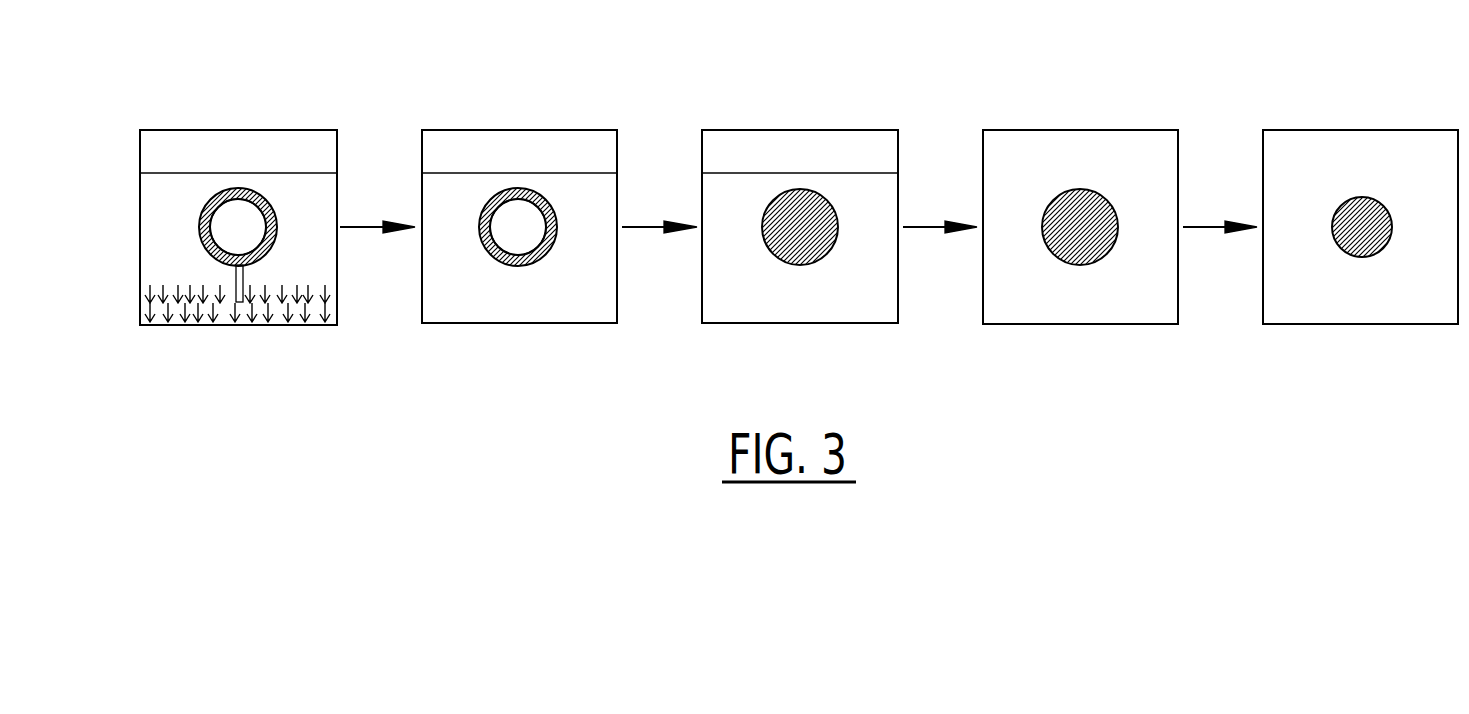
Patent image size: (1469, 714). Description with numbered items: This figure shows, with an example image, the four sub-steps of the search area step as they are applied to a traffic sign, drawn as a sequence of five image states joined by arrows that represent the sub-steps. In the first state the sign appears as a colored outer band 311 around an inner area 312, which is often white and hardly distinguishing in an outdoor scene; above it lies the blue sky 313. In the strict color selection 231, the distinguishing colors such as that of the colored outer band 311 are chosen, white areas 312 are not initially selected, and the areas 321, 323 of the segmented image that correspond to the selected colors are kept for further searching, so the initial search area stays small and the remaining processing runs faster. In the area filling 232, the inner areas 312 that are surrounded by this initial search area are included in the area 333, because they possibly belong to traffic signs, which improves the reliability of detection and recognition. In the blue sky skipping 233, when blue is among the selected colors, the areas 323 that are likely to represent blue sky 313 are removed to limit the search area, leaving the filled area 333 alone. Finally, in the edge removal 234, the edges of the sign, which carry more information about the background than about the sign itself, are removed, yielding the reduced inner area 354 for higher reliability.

The blue sky 313 is at (172, 145).
The colored outer band 311 is at (234, 188).
The inner area 312 is at (245, 220).
The selected color area 323 is at (457, 160).
The selected color area 321 is at (530, 263).
The filled area 333 is at (802, 238).
The inner area after edge removal 354 is at (1353, 235).
The strict color selection 231 is at (365, 228).
The area filling 232 is at (648, 230).
The blue sky skipping 233 is at (923, 230).
The edge removal 234 is at (1203, 230).